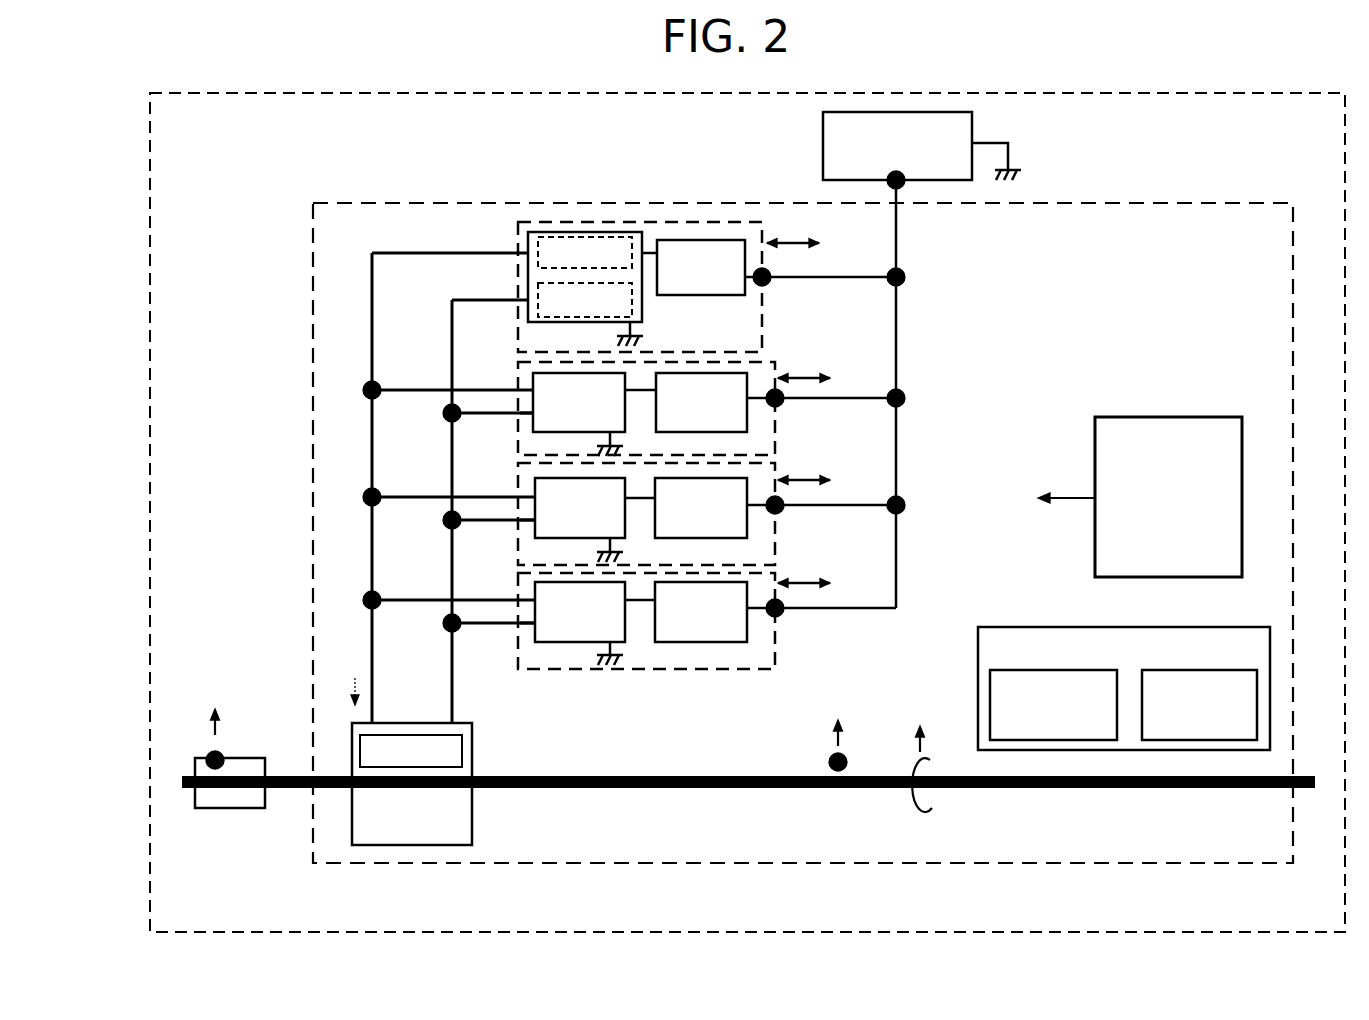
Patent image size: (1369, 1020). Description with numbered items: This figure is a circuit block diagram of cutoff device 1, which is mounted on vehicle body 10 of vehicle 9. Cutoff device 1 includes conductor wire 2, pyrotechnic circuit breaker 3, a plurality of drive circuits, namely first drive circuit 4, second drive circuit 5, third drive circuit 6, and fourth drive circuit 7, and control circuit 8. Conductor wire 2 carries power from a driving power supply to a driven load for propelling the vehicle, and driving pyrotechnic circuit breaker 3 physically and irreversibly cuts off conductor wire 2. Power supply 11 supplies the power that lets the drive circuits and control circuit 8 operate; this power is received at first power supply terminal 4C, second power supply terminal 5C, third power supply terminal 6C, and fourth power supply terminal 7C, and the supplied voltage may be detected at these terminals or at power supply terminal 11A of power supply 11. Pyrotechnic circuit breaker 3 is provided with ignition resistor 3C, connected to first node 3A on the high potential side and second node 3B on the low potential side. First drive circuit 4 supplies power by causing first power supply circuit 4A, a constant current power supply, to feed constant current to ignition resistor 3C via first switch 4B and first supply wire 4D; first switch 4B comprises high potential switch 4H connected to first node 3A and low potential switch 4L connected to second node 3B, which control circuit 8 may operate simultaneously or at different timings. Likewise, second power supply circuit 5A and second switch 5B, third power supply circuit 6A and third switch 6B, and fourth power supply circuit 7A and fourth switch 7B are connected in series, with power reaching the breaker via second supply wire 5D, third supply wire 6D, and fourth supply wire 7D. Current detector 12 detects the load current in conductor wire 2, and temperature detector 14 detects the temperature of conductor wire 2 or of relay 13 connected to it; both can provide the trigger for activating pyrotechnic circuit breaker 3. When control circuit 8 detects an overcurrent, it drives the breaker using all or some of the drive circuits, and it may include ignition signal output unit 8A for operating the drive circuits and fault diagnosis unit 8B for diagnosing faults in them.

The cutoff device 1 is at (313, 388).
The conductor wire 2 is at (635, 790).
The pyrotechnic circuit breaker 3 is at (368, 781).
The first node 3A is at (372, 635).
The second node 3B is at (452, 668).
The ignition resistor 3C is at (410, 767).
The first drive circuit 4 is at (507, 253).
The first power supply circuit 4A is at (705, 240).
The first switch 4B is at (518, 236).
The first power supply terminal 4C is at (770, 282).
The first supply wire 4D is at (372, 253).
The high potential switch 4H is at (528, 252).
The low potential switch 4L is at (528, 300).
The second drive circuit 5 is at (518, 362).
The second power supply circuit 5A is at (713, 373).
The second switch 5B is at (533, 420).
The second power supply terminal 5C is at (783, 403).
The second supply wire 5D is at (642, 388).
The third drive circuit 6 is at (518, 560).
The third power supply circuit 6A is at (675, 538).
The third switch 6B is at (533, 528).
The third power supply terminal 6C is at (783, 508).
The third supply wire 6D is at (640, 497).
The fourth drive circuit 7 is at (600, 669).
The fourth power supply circuit 7A is at (722, 642).
The fourth switch 7B is at (542, 642).
The fourth power supply terminal 7C is at (783, 611).
The fourth supply wire 7D is at (640, 600).
The control circuit 8 is at (1129, 544).
The ignition signal output unit 8A is at (1026, 670).
The fault diagnosis unit 8B is at (1233, 670).
The vehicle 9 is at (699, 512).
The vehicle body 10 is at (150, 432).
The power supply 11 is at (972, 128).
The power supply terminal 11A is at (904, 190).
The current detector 12 is at (935, 800).
The relay 13 is at (240, 808).
The temperature detector 14 is at (208, 760).